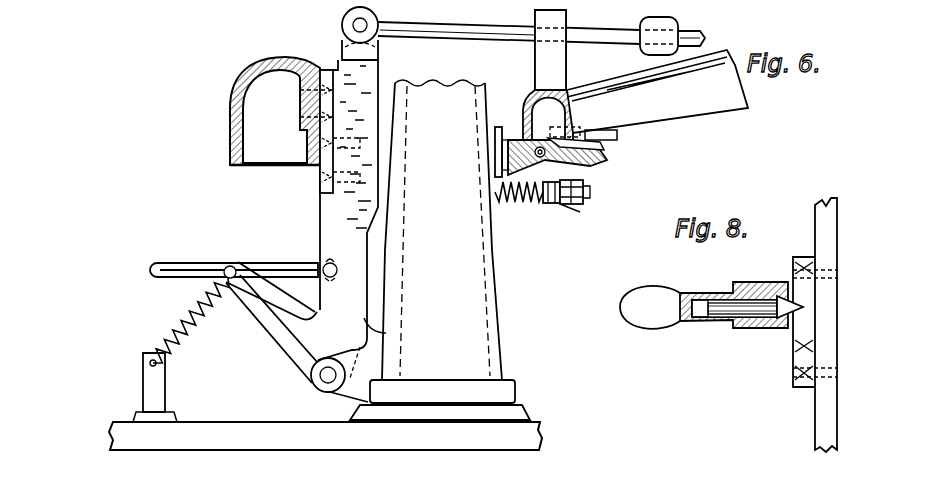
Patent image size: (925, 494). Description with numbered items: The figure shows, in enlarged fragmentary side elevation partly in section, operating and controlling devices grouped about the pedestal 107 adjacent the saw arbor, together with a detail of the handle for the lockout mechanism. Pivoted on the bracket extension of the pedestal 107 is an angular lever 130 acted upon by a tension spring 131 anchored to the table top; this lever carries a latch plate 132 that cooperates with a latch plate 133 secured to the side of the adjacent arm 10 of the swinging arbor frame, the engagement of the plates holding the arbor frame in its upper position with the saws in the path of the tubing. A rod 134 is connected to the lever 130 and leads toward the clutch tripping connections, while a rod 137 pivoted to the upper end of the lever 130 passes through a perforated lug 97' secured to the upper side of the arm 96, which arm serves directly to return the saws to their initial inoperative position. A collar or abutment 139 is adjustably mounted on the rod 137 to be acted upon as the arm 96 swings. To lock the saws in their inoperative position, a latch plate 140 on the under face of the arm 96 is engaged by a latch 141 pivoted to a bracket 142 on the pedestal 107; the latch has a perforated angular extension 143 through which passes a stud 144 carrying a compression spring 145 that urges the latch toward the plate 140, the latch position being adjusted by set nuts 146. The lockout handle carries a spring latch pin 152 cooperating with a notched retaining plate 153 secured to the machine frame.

In FIG. 6, the arm of the swinging arbor frame 10 is at (233, 92).
In FIG. 6, the swinging arm 96 is at (703, 105).
In FIG. 6, the perforated lug 97' is at (564, 75).
In FIG. 6, the pedestal 107 is at (477, 290).
In FIG. 6, the angular lever 130 is at (293, 345).
In FIG. 6, the tension spring 131 is at (182, 318).
In FIG. 6, the latch plate 132 is at (327, 160).
In FIG. 6, the latch plate 133 is at (332, 100).
In FIG. 6, the rod 134 is at (200, 247).
In FIG. 6, the rod 137 is at (505, 36).
In FIG. 6, the collar or abutment 139 is at (675, 22).
In FIG. 6, the latch plate 140 is at (600, 143).
In FIG. 6, the latch 141 is at (590, 167).
In FIG. 6, the bracket 142 is at (515, 143).
In FIG. 6, the perforated angular extension 143 is at (548, 207).
In FIG. 6, the stud 144 is at (583, 193).
In FIG. 6, the compression spring 145 is at (523, 207).
In FIG. 6, the set nuts 146 is at (563, 204).
In FIG. 8, the spring latch pin 152 is at (743, 303).
In FIG. 8, the notched retaining plate 153 is at (800, 343).